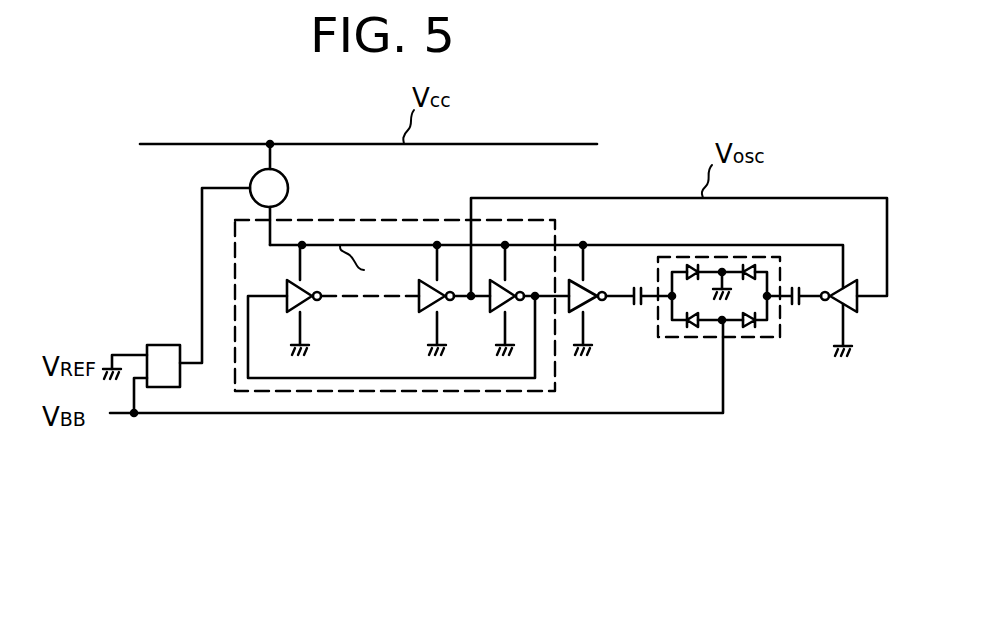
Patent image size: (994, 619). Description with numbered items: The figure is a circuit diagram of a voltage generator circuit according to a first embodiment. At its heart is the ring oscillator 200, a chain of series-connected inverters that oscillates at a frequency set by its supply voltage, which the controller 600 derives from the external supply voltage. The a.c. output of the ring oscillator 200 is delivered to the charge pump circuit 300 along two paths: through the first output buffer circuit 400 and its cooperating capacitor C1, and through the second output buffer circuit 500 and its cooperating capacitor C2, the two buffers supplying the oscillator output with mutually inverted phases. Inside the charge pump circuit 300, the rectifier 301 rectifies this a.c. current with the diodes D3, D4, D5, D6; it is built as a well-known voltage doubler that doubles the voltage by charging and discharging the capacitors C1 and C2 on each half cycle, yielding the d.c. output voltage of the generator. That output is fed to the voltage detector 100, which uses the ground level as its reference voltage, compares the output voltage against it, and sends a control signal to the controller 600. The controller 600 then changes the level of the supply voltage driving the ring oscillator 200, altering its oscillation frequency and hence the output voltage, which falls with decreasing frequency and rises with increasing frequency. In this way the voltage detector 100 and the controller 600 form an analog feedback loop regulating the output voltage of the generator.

The voltage detector 100 is at (157, 345).
The ring oscillator 200 is at (363, 392).
The charge pump circuit 300 is at (744, 369).
The rectifier 301 is at (751, 318).
The first output buffer circuit 400 is at (594, 306).
The second output buffer circuit 500 is at (851, 317).
The controller 600 is at (289, 191).
The capacitor C1 is at (640, 287).
The capacitor C2 is at (806, 288).
The diode D3 is at (691, 263).
The diode D4 is at (690, 337).
The diode D5 is at (748, 263).
The diode D6 is at (746, 337).